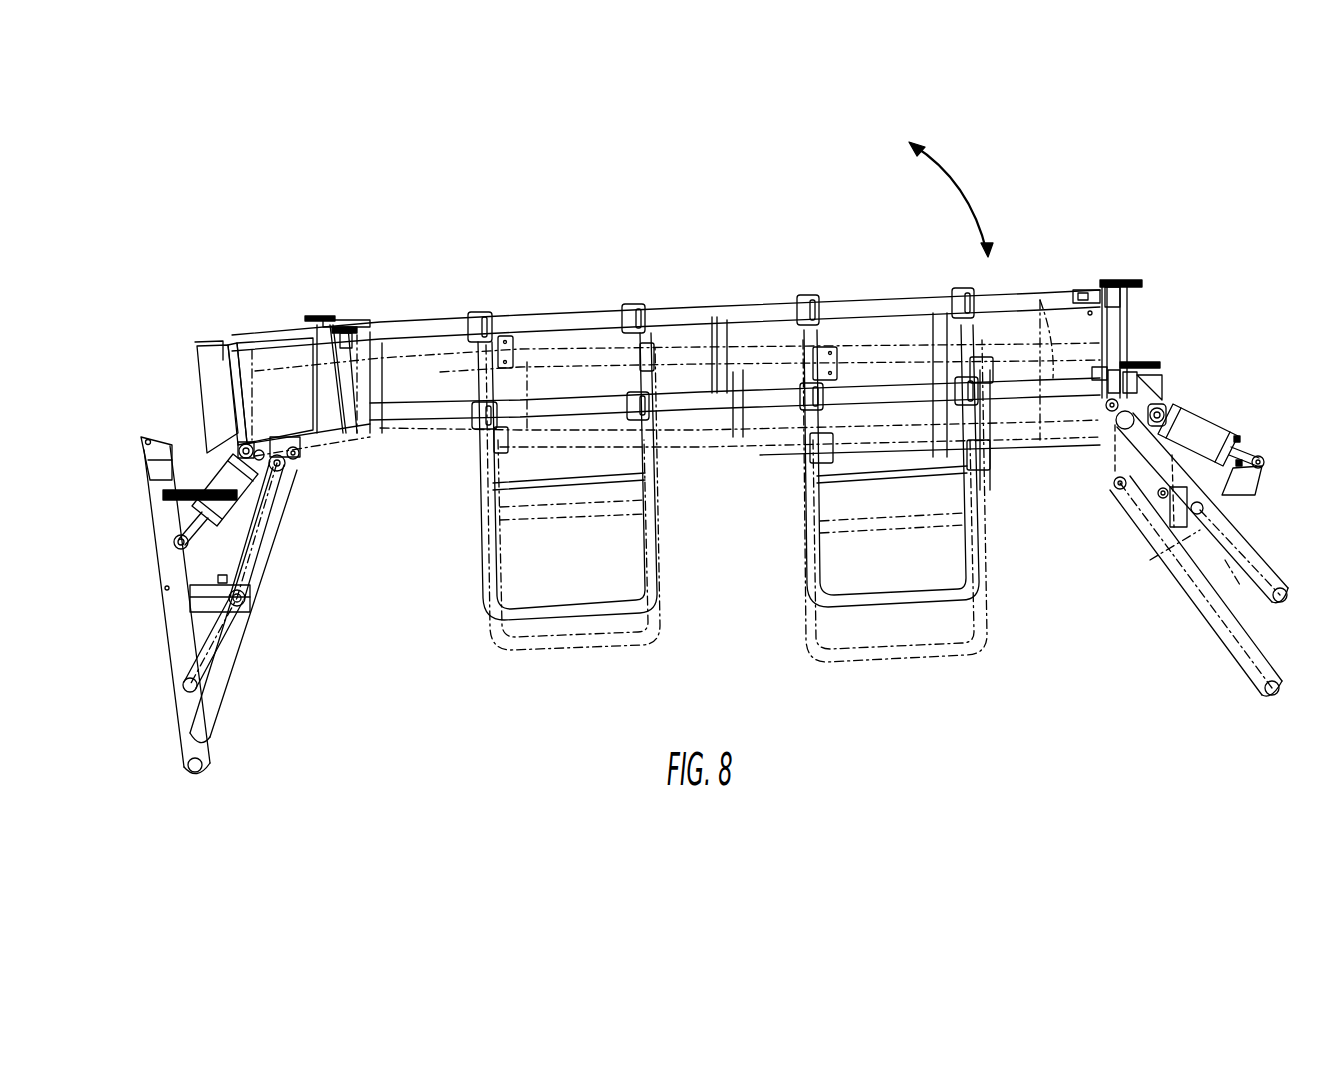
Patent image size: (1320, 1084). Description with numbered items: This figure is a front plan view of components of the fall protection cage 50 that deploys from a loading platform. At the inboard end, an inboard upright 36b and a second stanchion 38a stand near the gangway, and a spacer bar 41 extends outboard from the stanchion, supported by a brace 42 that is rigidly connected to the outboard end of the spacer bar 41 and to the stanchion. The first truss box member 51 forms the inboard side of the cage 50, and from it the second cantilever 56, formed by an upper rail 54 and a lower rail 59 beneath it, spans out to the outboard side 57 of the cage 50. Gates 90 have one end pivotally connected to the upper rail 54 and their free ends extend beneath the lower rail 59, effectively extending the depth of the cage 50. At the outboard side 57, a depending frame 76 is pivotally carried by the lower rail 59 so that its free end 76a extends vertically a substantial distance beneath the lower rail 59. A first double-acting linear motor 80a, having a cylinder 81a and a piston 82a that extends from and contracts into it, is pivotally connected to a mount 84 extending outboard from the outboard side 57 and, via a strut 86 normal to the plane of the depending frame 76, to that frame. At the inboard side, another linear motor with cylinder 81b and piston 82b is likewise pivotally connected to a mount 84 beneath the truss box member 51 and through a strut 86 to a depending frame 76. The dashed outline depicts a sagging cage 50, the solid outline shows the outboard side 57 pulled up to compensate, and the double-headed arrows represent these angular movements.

The fall protection cage 50 is at (595, 244).
The first truss box member 51 is at (242, 340).
The upper rail 54 is at (702, 310).
The second cantilever 56 is at (1053, 378).
The outboard side 57 is at (1130, 320).
The lower rail 59 is at (685, 408).
The first double-acting linear motor 80a is at (1224, 323).
The cylinder 81a is at (1200, 412).
The cylinder 81b is at (185, 460).
The piston 82a is at (1238, 445).
The piston 82b is at (198, 470).
The mount 84 is at (245, 442).
The strut 86 is at (180, 566).
The depending frame 76 is at (195, 562).
The free end 76a is at (1282, 598).
The brace 42 is at (217, 688).
The spacer bar 41 is at (177, 593).
The inboard upright 36b is at (175, 657).
The second stanchion 38a is at (208, 370).
The gate 90 is at (567, 612).